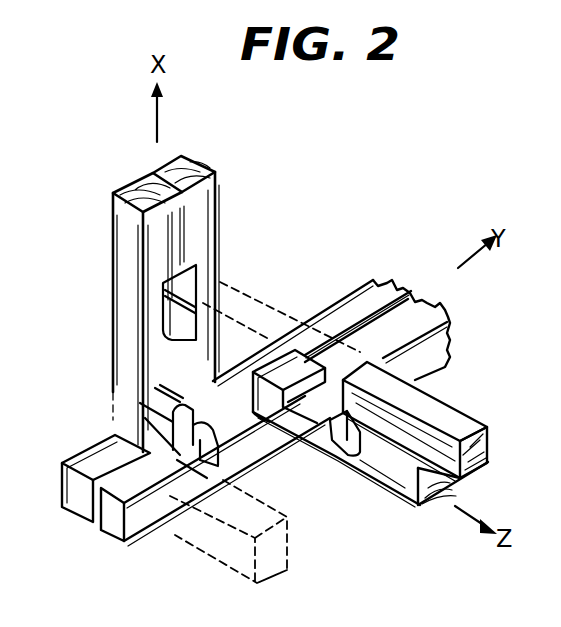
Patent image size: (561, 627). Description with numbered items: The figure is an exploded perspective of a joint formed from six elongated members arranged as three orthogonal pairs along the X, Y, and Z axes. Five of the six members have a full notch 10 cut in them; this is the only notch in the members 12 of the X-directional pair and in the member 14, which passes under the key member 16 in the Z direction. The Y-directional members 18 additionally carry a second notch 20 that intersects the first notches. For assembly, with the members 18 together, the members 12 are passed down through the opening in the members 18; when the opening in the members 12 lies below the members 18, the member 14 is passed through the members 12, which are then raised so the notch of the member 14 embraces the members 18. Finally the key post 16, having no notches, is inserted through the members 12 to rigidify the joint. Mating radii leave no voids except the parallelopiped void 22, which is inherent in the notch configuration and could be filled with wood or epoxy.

The full notch 10 is at (213, 275).
The members of the X-directional pair 12 is at (151, 176).
The member 14 is at (402, 487).
The key member 16 is at (458, 421).
The Y-directional members 18 is at (445, 316).
The additional notch 20 is at (132, 438).
The parallelopiped void 22 is at (150, 397).